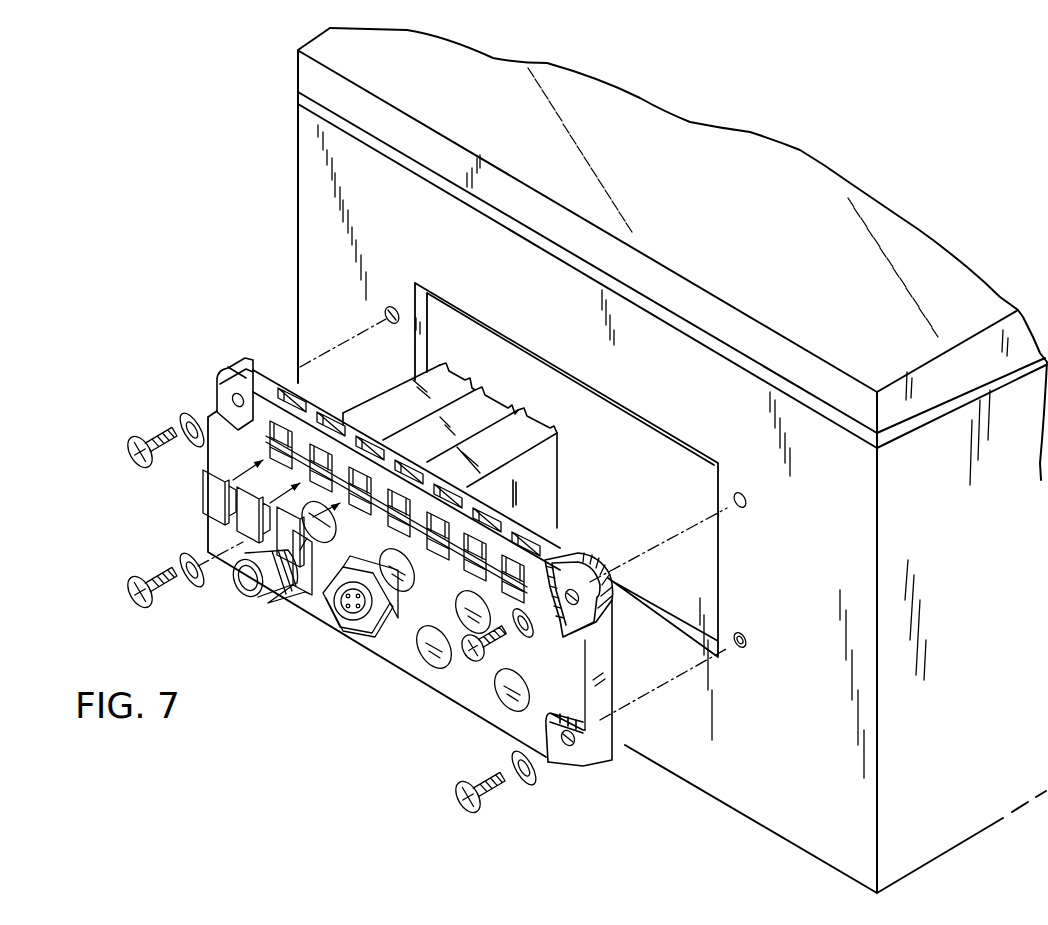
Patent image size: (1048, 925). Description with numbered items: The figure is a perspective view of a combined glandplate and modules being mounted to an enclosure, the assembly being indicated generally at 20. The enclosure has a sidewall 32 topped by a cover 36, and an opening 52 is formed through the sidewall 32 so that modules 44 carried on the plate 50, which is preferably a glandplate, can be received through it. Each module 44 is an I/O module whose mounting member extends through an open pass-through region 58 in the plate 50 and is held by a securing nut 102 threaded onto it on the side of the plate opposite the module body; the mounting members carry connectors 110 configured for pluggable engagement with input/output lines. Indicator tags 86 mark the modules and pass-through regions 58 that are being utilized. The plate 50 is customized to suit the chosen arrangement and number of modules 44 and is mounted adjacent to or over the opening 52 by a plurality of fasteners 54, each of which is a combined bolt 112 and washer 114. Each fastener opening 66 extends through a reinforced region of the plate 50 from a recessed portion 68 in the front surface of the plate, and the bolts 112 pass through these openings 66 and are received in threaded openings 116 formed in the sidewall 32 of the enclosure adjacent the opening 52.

The electronic device assembly 20 is at (294, 37).
The sidewall 32 is at (785, 583).
The housing cover 36 is at (494, 62).
The module 44 is at (531, 428).
The plate 50 is at (568, 546).
The opening 52 is at (646, 428).
The fastener 54 is at (114, 452).
The pass-through region 58 is at (462, 617).
The opening 66 is at (220, 386).
The recessed portion 68 is at (242, 388).
The indicator tag 86 is at (278, 535).
The securing nut 102 is at (288, 596).
The connector 110 is at (246, 596).
The bolt 112 is at (154, 437).
The washer 114 is at (186, 412).
The threaded opening 116 is at (750, 646).